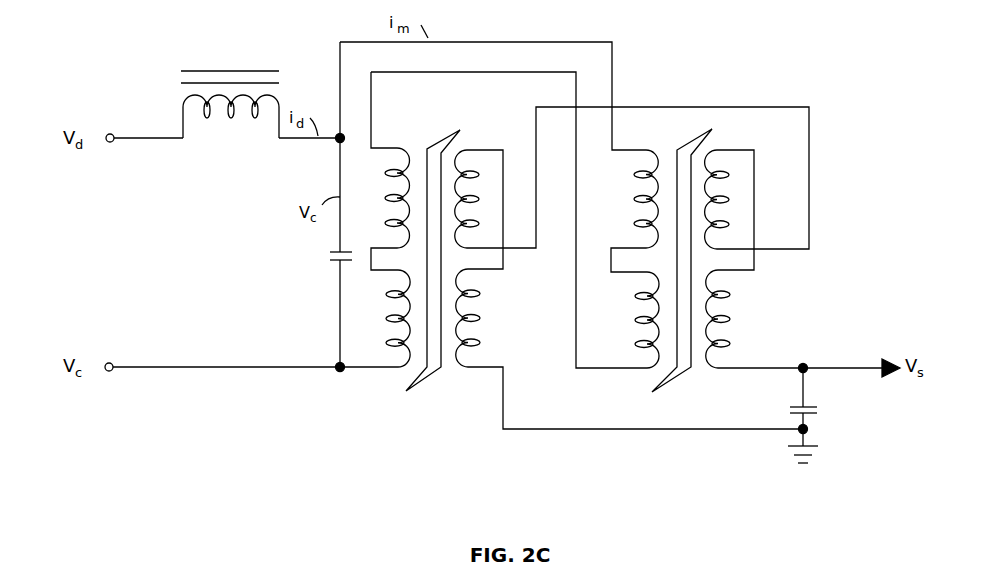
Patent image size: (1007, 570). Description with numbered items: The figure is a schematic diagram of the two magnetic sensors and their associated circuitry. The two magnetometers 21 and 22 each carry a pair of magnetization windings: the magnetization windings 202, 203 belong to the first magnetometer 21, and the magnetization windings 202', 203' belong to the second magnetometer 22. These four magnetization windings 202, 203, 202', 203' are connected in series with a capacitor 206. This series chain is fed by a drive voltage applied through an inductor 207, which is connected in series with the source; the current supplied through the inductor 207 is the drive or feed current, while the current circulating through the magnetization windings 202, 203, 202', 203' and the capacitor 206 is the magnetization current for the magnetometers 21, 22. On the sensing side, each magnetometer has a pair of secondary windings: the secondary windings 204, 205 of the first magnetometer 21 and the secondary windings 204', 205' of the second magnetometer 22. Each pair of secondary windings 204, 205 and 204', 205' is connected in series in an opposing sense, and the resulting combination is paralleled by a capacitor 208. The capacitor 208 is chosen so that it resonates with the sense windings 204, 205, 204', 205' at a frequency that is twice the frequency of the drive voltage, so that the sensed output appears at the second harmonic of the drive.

The magnetometer 21 is at (433, 274).
The magnetometer 22 is at (682, 275).
The magnetization winding 202 is at (379, 198).
The magnetization winding 203 is at (378, 318).
The secondary winding 204 is at (487, 318).
The secondary winding 205 is at (487, 189).
The magnetization winding 202' is at (627, 199).
The magnetization winding 203' is at (626, 320).
The secondary winding 204' is at (742, 319).
The secondary winding 205' is at (748, 199).
The capacitor 206 is at (317, 256).
The inductor 207 is at (230, 110).
The capacitor 208 is at (826, 398).